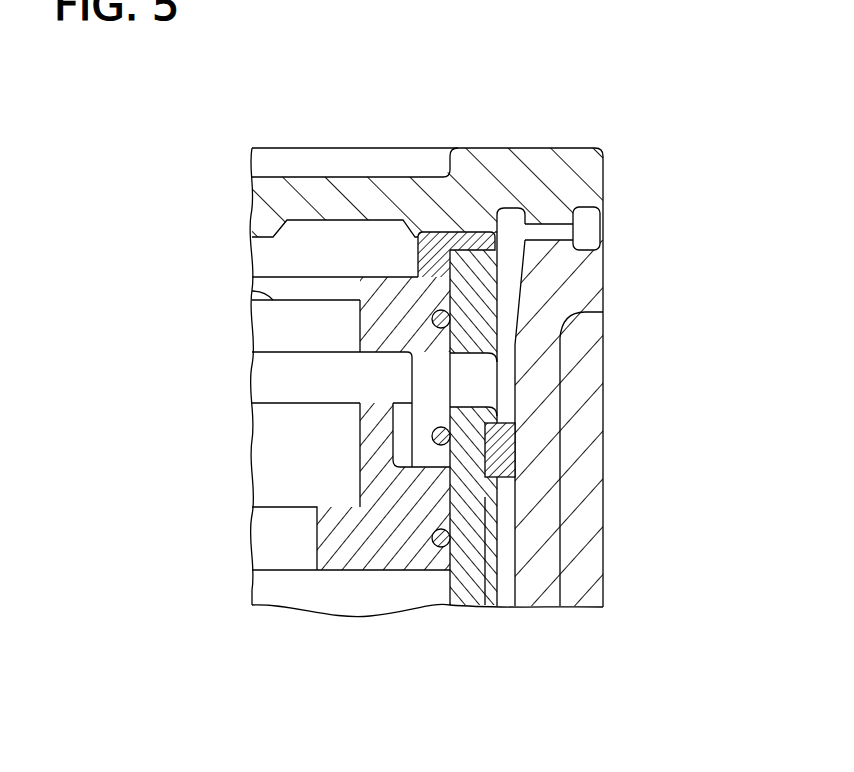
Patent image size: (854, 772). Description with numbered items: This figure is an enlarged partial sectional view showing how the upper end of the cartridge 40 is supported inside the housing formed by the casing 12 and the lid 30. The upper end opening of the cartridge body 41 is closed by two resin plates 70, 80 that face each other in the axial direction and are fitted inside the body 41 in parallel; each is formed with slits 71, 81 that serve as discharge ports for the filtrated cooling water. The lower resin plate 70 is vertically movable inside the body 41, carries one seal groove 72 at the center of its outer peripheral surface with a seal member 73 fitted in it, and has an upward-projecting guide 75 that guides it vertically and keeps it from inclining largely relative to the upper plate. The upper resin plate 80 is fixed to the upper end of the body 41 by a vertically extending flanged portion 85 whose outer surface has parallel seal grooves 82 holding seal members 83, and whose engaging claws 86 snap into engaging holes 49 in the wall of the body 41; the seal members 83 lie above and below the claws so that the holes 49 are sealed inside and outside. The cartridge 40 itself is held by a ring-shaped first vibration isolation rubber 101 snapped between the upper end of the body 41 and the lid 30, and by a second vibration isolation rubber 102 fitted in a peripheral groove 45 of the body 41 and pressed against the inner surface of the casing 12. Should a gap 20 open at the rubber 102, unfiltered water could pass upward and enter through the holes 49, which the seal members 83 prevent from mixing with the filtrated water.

The casing 12 is at (565, 479).
The gap 20 is at (507, 583).
The lid 30 is at (499, 143).
The cartridge 40 is at (341, 253).
The cartridge body 41 is at (453, 585).
The groove 45 is at (520, 462).
The engaging holes 49 is at (505, 392).
The resin plate 70 is at (288, 503).
The slits 71 is at (268, 556).
The seal groove 72 is at (415, 565).
The seal member 73 is at (453, 530).
The guide 75 is at (358, 460).
The resin plate 80 is at (262, 291).
The slits 81 is at (265, 332).
The seal grooves 82 is at (440, 428).
The seal members 83 is at (452, 318).
The flanged portion 85 is at (505, 283).
The engaging claws 86 is at (470, 367).
The first vibration isolation rubber 101 is at (426, 232).
The second vibration isolation rubber 102 is at (515, 445).